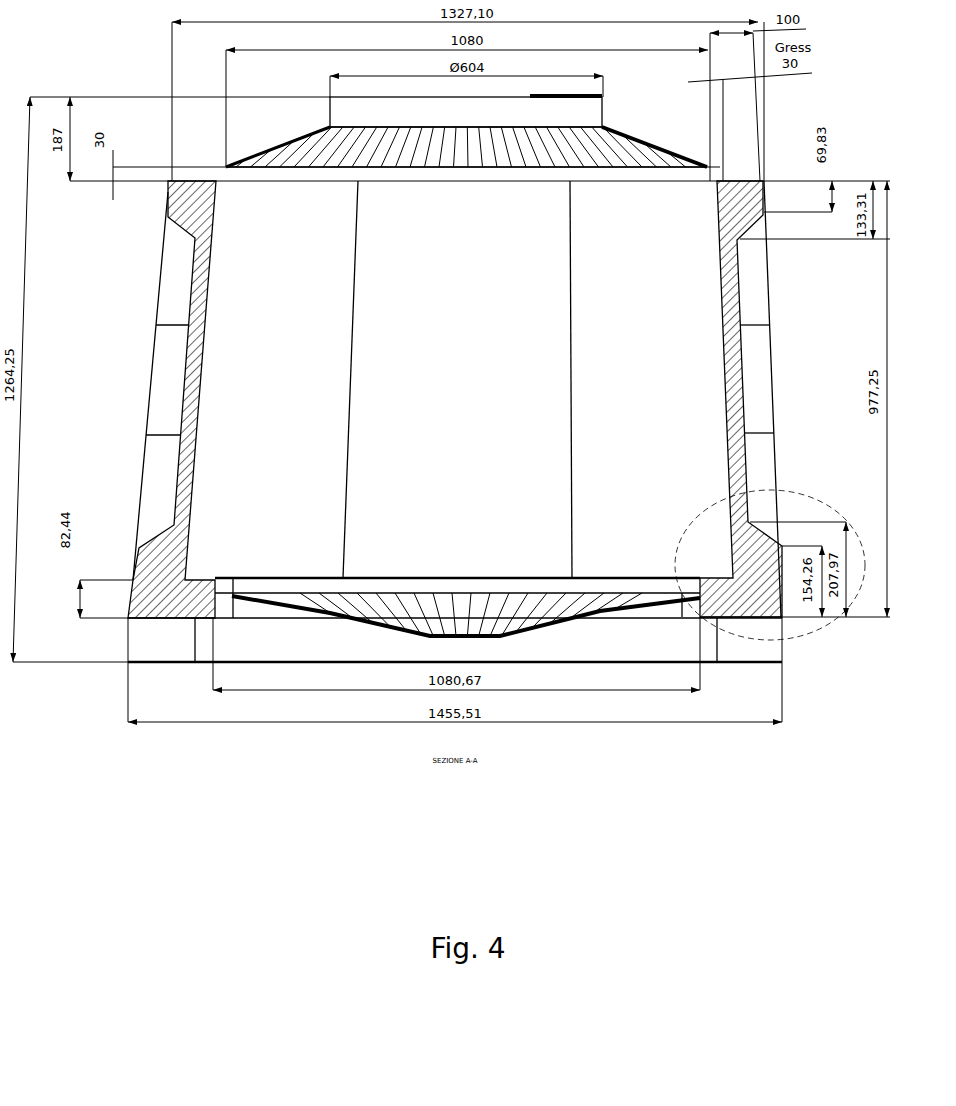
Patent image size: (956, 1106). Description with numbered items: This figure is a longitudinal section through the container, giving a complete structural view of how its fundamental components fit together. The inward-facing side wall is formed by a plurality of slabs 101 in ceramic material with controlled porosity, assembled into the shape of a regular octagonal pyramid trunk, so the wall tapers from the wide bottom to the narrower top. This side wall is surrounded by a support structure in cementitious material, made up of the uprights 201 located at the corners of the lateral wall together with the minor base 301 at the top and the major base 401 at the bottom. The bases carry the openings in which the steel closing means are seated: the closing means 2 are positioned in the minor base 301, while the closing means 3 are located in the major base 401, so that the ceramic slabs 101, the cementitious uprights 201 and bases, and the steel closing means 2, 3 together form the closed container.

The slabs 101 is at (183, 393).
The uprights 201 is at (765, 478).
The minor base 301 is at (370, 174).
The closing means 2 is at (550, 152).
The closing means 3 is at (548, 633).
The major base 401 is at (128, 618).